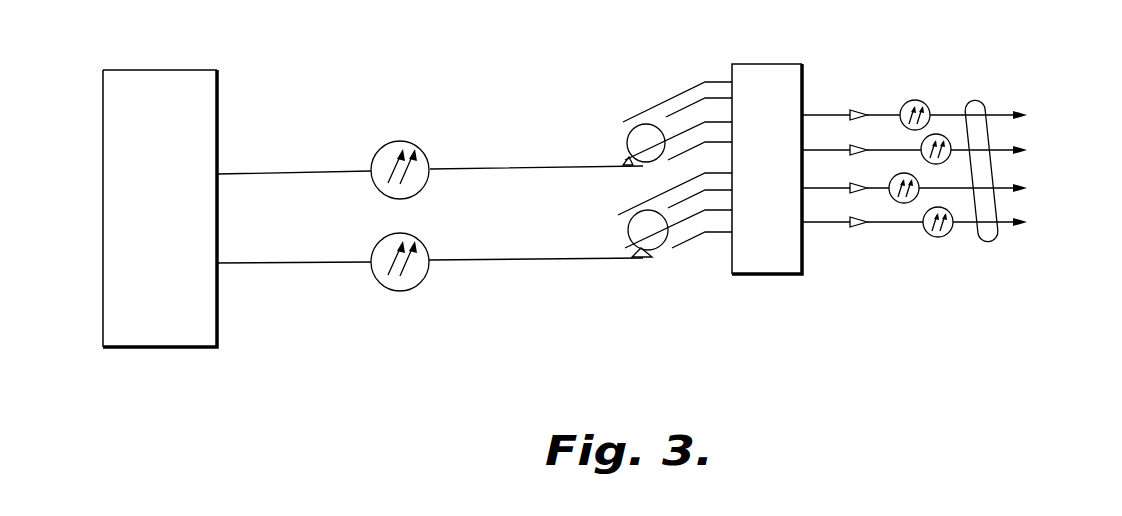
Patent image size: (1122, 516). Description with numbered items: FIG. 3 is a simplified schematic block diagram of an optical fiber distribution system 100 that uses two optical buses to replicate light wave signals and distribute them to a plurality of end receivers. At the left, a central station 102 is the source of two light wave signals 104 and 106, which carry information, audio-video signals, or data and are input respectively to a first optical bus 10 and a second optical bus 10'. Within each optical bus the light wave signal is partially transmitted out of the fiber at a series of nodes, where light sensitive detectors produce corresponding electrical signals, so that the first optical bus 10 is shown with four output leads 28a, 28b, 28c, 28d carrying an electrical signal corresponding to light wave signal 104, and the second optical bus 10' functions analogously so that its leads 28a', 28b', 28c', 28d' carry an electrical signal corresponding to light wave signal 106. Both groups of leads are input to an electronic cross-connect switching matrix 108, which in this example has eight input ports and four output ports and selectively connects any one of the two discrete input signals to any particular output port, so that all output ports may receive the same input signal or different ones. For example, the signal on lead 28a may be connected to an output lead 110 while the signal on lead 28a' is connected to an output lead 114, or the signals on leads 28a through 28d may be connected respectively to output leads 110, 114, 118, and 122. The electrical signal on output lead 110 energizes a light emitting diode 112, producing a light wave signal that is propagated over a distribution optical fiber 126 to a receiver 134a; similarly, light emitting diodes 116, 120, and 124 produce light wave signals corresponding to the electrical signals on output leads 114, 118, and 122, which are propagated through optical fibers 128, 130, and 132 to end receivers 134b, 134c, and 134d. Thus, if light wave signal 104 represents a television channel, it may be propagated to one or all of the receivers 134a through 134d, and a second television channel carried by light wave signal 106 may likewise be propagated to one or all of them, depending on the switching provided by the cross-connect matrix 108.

The optical fiber distribution system 100 is at (611, 281).
The central station 102 is at (103, 172).
The light wave signal 104 is at (296, 173).
The light wave signal 106 is at (290, 263).
The optical bus 10 is at (635, 140).
The optical bus 10' is at (638, 232).
The output lead 28a is at (677, 89).
The output lead 28b is at (670, 95).
The output lead 28c is at (678, 132).
The output lead 28d is at (700, 156).
The output lead 28a' is at (669, 194).
The output lead 28b' is at (699, 203).
The output lead 28c' is at (678, 253).
The output lead 28d' is at (701, 249).
The electronic cross-connect switching matrix 108 is at (767, 63).
The output lead 110 is at (815, 114).
The light emitting diode 112 is at (866, 111).
The output lead 114 is at (832, 137).
The light emitting diode 116 is at (860, 152).
The output lead 118 is at (832, 194).
The light emitting diode 120 is at (862, 189).
The output lead 122 is at (827, 226).
The light emitting diode 124 is at (856, 227).
The distribution optical fiber 126 is at (943, 110).
The optical fiber 128 is at (893, 148).
The optical fiber 130 is at (949, 187).
The optical fiber 132 is at (970, 218).
The receiver 134a is at (1022, 108).
The end receiver 134b is at (1022, 146).
The end receiver 134c is at (1022, 186).
The end receiver 134d is at (1022, 220).